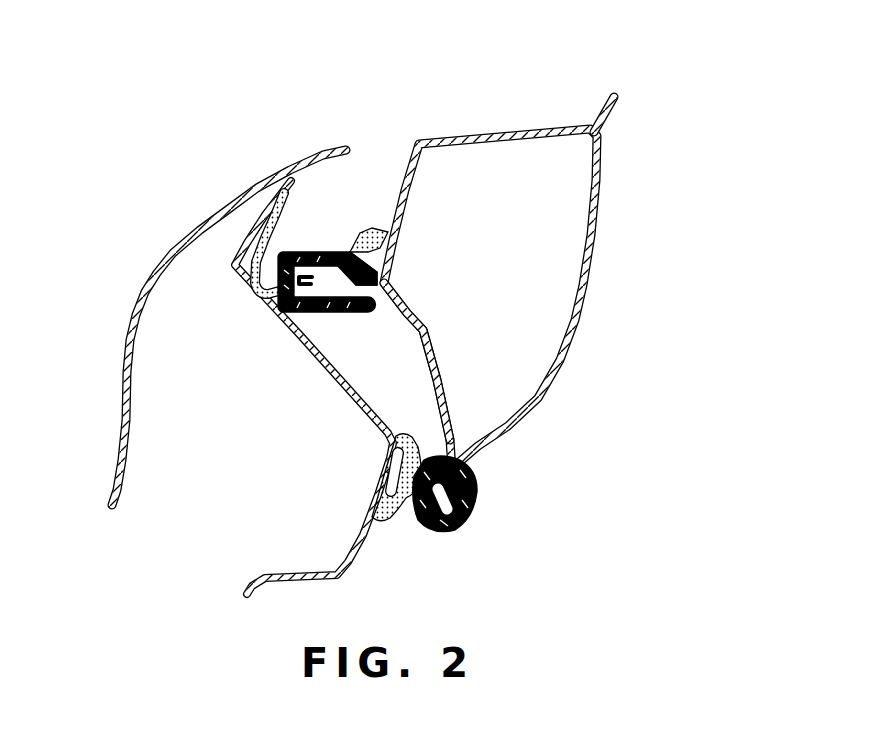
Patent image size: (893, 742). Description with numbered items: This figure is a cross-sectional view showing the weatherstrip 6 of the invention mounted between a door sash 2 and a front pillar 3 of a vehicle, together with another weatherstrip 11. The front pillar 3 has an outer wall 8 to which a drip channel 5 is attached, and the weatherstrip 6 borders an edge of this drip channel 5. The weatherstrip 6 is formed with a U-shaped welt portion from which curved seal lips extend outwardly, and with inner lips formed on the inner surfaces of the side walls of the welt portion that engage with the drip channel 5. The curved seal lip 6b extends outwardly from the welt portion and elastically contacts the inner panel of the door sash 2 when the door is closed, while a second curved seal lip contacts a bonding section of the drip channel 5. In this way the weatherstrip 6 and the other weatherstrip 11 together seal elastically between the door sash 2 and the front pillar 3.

The door sash 2 is at (123, 372).
The front pillar 3 is at (605, 197).
The drip channel 5 is at (371, 288).
The weatherstrip 6 is at (330, 252).
The seal lip 6b is at (272, 229).
The outer wall 8 is at (436, 343).
The another weatherstrip 11 is at (470, 508).